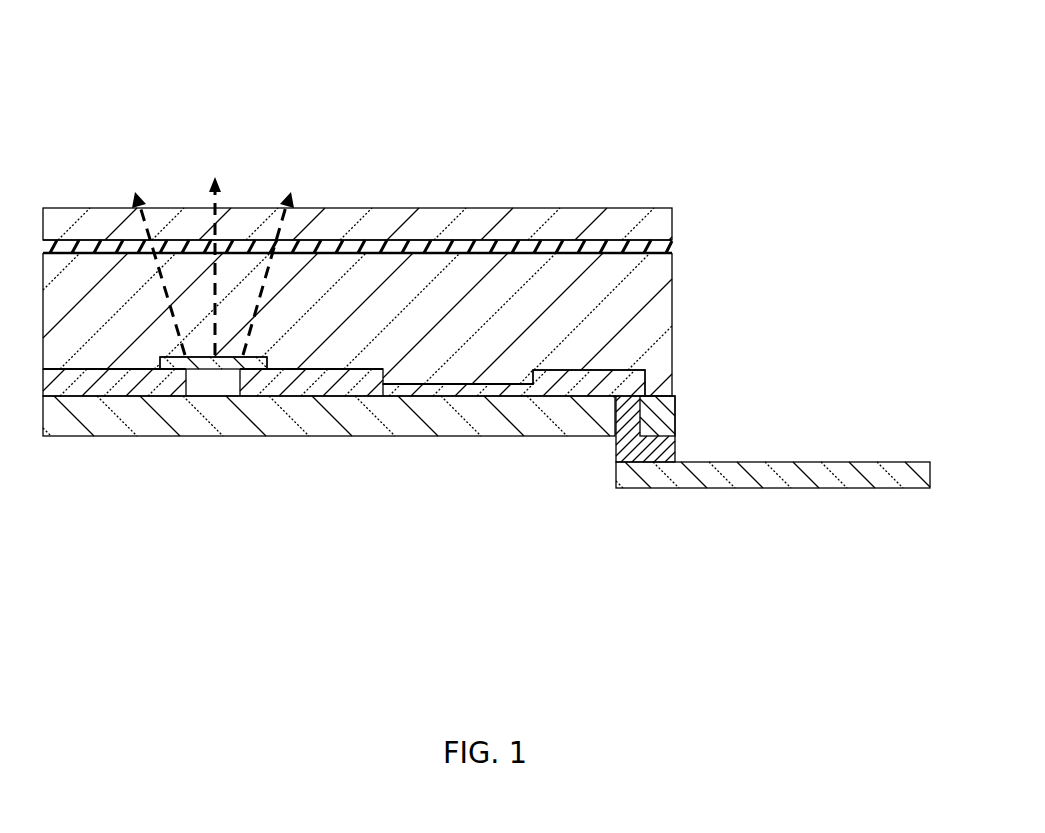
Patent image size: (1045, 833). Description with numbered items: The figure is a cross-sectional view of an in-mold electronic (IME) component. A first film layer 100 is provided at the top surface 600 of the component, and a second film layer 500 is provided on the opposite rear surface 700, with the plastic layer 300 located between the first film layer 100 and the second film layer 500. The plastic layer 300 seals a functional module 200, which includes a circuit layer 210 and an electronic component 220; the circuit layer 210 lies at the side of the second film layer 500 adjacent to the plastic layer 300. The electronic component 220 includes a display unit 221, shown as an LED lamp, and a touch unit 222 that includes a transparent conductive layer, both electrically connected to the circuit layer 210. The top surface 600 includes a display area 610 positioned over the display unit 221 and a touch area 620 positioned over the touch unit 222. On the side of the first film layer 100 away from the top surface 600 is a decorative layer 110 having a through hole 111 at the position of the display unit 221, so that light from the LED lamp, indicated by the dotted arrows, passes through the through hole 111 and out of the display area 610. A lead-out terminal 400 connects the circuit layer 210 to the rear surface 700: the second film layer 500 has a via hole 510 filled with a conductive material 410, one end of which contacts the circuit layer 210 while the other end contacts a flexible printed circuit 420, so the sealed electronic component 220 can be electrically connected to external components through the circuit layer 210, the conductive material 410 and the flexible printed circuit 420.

The first film layer 100 is at (623, 230).
The decorative layer 110 is at (664, 246).
The through hole 111 is at (198, 245).
The functional module 200 is at (344, 504).
The circuit layer 210 is at (128, 378).
The electronic component 220 is at (346, 471).
The display unit 221 is at (210, 360).
The touch unit 222 is at (430, 388).
The plastic layer 300 is at (658, 340).
The lead-out terminal 400 is at (773, 510).
The conductive material 410 is at (633, 442).
The flexible printed circuit (FPC) 420 is at (645, 562).
The second film layer 500 is at (497, 413).
The via hole 510 is at (615, 413).
The top surface 600 is at (376, 109).
The display area 610 is at (228, 208).
The touch area 620 is at (486, 142).
The rear surface 700 is at (70, 428).